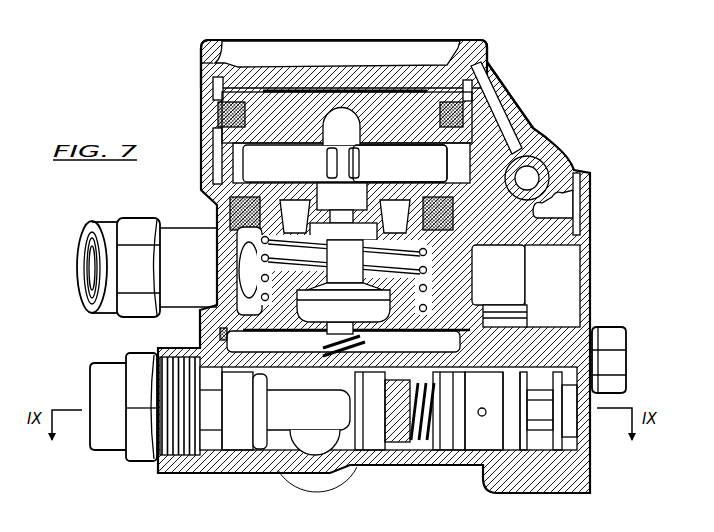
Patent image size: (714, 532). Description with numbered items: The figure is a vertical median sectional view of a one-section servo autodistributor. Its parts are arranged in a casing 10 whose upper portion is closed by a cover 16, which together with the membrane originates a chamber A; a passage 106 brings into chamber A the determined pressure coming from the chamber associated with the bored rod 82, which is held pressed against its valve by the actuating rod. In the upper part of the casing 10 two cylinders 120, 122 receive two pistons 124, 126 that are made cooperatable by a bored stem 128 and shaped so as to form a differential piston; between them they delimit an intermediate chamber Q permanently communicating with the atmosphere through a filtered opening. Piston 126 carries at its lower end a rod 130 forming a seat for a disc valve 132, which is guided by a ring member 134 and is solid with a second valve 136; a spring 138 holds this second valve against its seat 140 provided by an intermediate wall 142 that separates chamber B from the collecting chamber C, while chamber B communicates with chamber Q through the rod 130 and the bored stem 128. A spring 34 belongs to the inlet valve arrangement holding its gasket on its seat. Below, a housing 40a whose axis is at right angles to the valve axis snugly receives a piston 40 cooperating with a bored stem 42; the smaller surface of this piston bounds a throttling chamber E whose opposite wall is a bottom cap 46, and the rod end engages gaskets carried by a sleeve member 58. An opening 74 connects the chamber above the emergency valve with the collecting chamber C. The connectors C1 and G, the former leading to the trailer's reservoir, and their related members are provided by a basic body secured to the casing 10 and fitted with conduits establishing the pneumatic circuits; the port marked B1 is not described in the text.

The casing 10 is at (197, 128).
The cover 16 is at (490, 47).
The spring 34 is at (458, 262).
The piston 40 is at (372, 437).
The housing 40a is at (413, 450).
The bored stem 42 is at (238, 418).
The bottom cap 46 is at (260, 440).
The sleeve member 58 is at (478, 437).
The opening 74 is at (485, 417).
The bored rod 82 is at (545, 165).
The passage 106 is at (528, 115).
The cylinder 120 is at (200, 83).
The cylinder 122 is at (217, 213).
The piston 124 is at (283, 113).
The piston 126 is at (200, 182).
The bored stem 128 is at (345, 162).
The rod 130 is at (378, 190).
The disc valve 132 is at (336, 230).
The ring member 134 is at (300, 190).
The second valve 136 is at (377, 302).
The spring 138 is at (367, 338).
The seat 140 is at (380, 287).
The intermediate wall 142 is at (528, 313).
The chamber A is at (372, 90).
The chamber B is at (440, 248).
The inlet port B1 is at (88, 282).
The collecting chamber C is at (217, 337).
The trailer reservoir connector C1 is at (330, 452).
The throttling chamber E is at (287, 440).
The connector G is at (167, 438).
The intermediate chamber Q is at (243, 163).